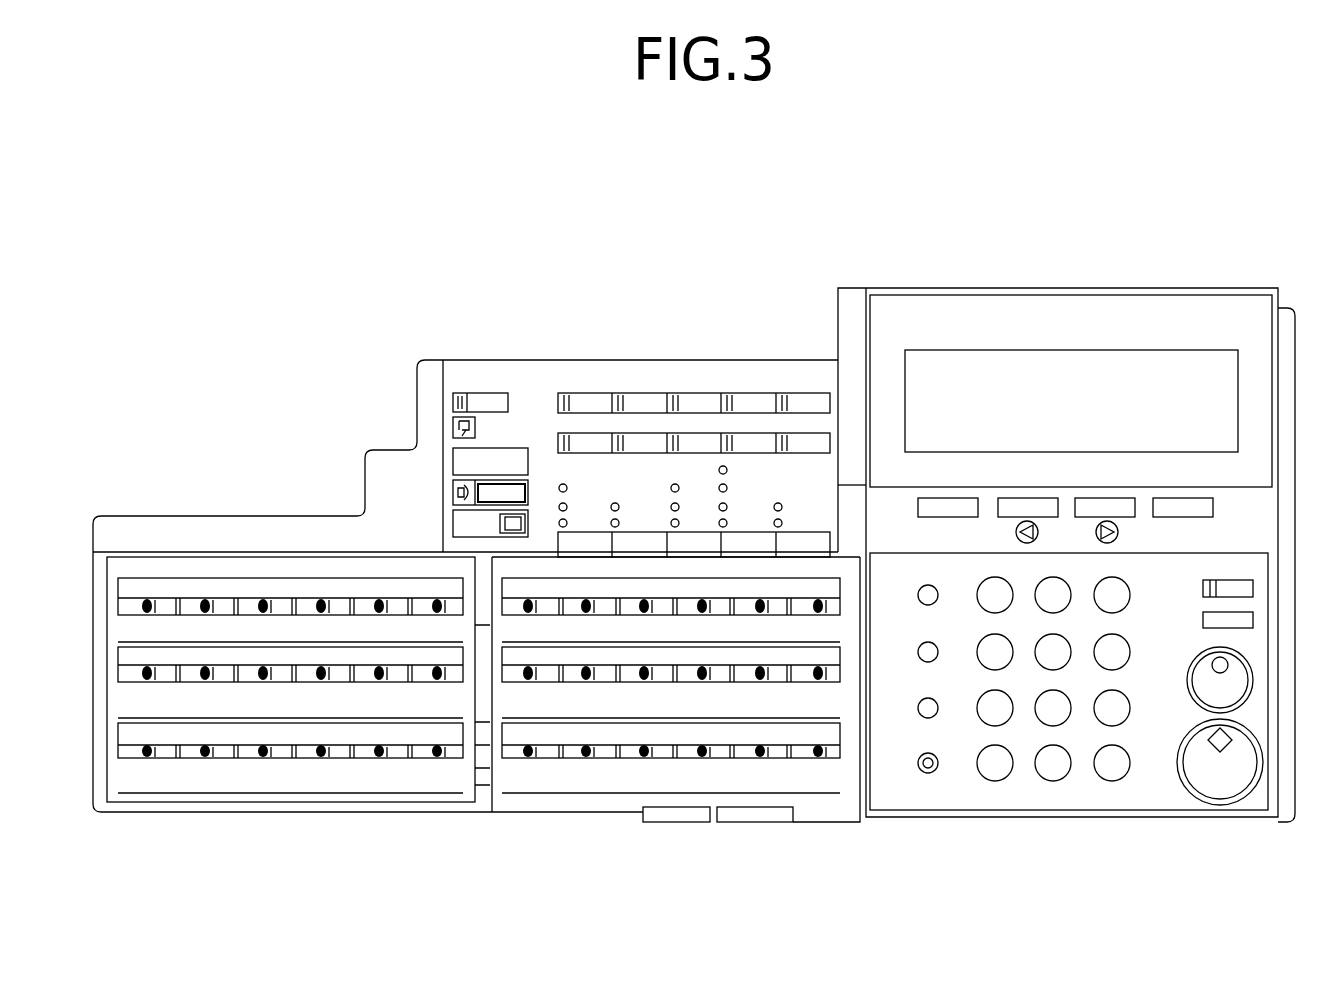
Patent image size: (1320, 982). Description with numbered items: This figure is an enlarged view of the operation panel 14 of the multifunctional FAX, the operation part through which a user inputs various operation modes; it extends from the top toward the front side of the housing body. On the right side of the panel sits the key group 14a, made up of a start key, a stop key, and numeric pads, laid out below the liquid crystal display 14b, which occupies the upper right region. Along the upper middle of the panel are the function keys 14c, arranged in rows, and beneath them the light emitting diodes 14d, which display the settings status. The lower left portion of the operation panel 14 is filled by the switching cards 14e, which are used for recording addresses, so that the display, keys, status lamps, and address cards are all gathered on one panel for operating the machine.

The operation panel 14 is at (790, 305).
The key group 14a is at (1277, 830).
The liquid crystal display 14b is at (1148, 363).
The function keys 14c is at (830, 356).
The light emitting diodes 14d is at (596, 478).
The switching cards 14e is at (573, 775).